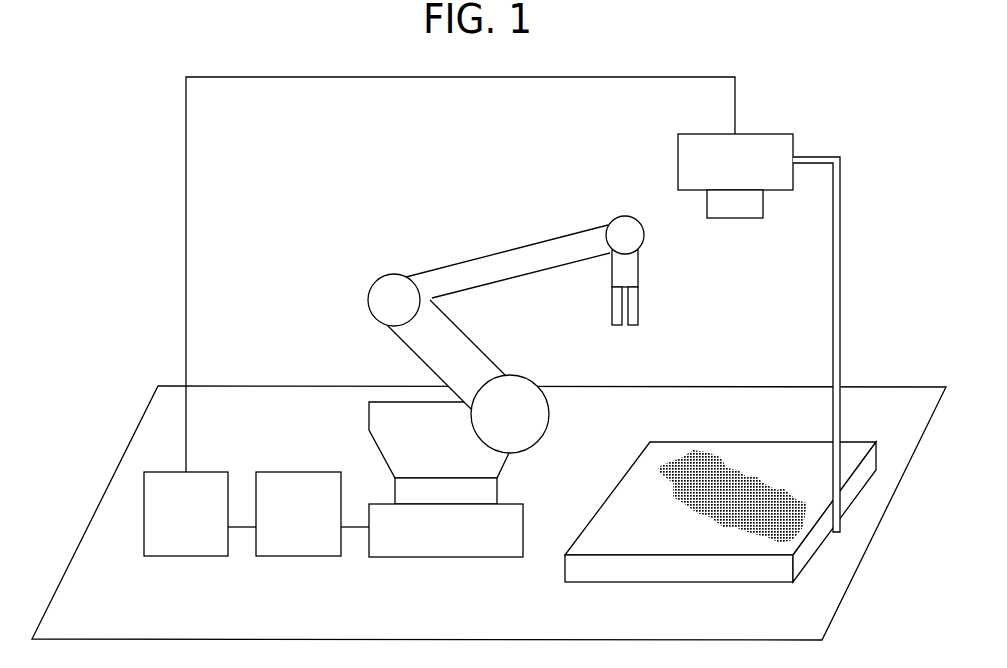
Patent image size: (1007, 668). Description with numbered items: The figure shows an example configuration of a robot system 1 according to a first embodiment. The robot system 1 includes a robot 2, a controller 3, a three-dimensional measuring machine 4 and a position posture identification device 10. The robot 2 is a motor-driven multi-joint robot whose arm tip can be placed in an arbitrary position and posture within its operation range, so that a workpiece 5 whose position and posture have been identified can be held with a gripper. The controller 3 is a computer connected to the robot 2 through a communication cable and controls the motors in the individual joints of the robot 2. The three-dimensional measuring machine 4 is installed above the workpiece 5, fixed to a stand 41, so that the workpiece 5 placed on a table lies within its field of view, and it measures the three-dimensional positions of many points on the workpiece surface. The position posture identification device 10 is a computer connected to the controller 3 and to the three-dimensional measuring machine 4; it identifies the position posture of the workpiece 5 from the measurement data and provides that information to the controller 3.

The robot system 1 is at (138, 95).
The robot 2 is at (540, 243).
The controller 3 is at (310, 471).
The three-dimensional measuring machine 4 is at (765, 132).
The stand 41 is at (822, 156).
The workpiece 5 is at (707, 455).
The position posture identification device 10 is at (199, 471).